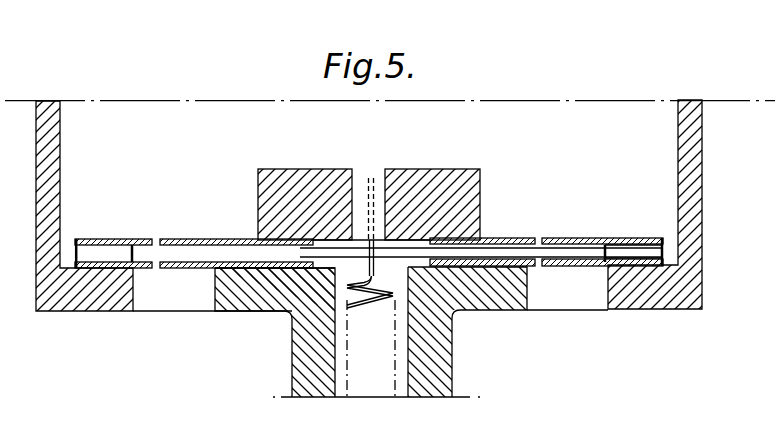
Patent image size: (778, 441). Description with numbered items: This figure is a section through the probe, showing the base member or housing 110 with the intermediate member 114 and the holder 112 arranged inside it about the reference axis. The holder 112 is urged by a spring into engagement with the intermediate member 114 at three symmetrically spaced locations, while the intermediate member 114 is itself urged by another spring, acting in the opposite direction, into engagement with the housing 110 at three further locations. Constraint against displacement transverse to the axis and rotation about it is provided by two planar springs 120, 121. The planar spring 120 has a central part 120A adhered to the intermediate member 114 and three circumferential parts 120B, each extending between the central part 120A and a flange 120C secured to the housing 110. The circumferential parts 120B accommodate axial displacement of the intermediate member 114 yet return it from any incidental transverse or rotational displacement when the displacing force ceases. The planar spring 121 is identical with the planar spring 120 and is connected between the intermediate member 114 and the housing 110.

The base member or housing 110 is at (60, 139).
The holder 112 is at (447, 370).
The intermediate member 114 is at (470, 202).
The planar spring 120 is at (300, 240).
The central part 120A is at (232, 239).
The circumferential parts 120B is at (189, 239).
The flange 120C is at (107, 239).
The planar spring 121 is at (254, 270).